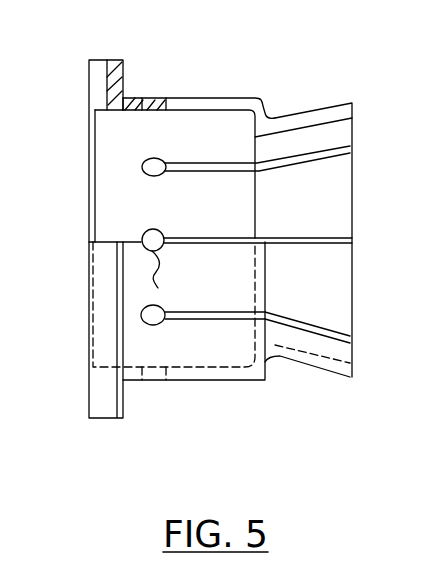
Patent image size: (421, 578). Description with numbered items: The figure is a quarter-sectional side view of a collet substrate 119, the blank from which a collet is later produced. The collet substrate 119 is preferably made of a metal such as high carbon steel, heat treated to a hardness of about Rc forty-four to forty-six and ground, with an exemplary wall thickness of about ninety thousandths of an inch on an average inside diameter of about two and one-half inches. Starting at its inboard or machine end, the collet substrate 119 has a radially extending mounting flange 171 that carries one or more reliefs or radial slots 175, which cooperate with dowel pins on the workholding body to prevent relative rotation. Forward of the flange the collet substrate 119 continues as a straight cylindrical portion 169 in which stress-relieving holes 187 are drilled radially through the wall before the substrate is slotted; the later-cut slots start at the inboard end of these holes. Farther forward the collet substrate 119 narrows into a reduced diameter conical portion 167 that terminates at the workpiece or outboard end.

The collet substrate 119 is at (286, 60).
The conical portion 167 is at (302, 118).
The straight cylindrical portion 169 is at (134, 100).
The mounting flange 171 is at (116, 62).
The radial slot 175 is at (90, 88).
The stress-relieving hole 187 is at (159, 102).